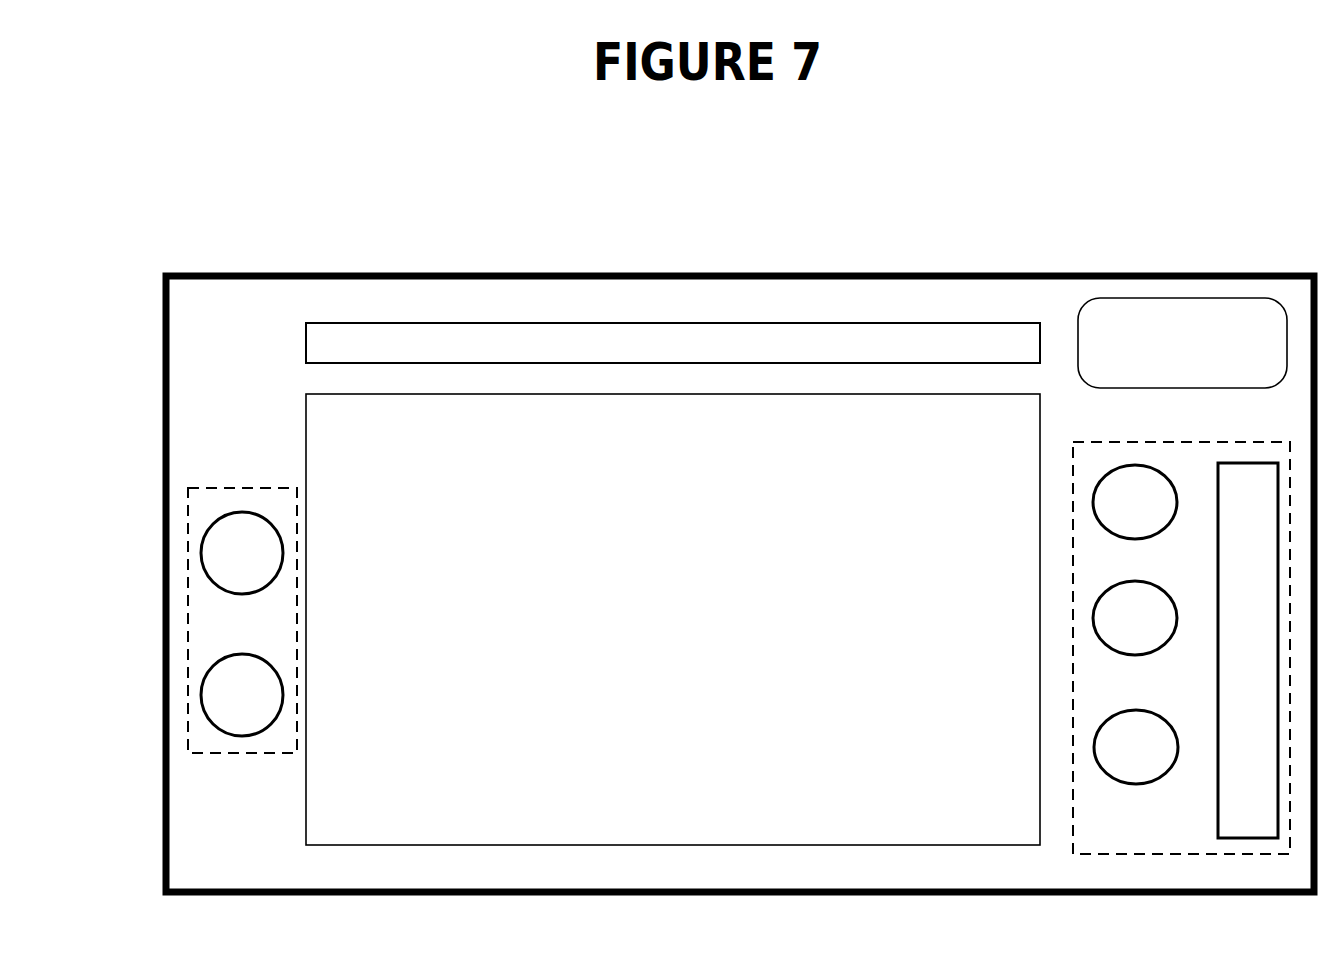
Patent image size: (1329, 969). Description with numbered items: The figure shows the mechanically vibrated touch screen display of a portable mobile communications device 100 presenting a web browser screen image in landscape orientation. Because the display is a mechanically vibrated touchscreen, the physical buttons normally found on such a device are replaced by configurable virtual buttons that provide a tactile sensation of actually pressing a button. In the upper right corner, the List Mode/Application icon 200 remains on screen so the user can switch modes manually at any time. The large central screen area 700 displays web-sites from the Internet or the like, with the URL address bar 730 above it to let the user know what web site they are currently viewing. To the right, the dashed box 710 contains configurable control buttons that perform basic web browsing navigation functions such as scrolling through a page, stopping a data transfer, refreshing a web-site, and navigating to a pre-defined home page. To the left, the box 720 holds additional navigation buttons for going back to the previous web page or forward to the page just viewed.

The portable mobile communications device 100 is at (162, 419).
The List Mode/Application icon 200 is at (1182, 389).
The screen area 700 is at (306, 441).
The dashed box of configurable control buttons 710 is at (1160, 441).
The box of additional web browsing navigation buttons 720 is at (260, 755).
The URL address bar 730 is at (306, 343).